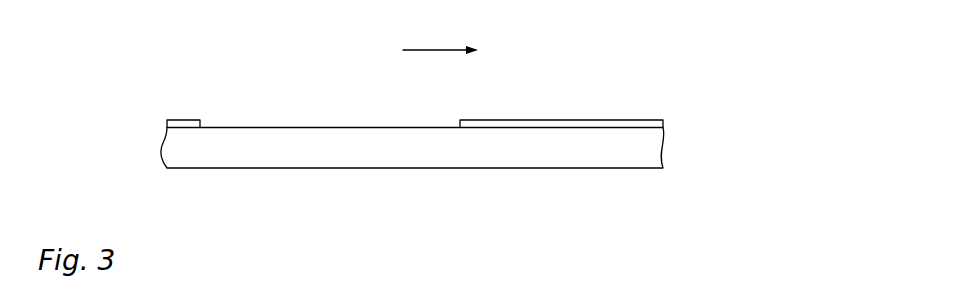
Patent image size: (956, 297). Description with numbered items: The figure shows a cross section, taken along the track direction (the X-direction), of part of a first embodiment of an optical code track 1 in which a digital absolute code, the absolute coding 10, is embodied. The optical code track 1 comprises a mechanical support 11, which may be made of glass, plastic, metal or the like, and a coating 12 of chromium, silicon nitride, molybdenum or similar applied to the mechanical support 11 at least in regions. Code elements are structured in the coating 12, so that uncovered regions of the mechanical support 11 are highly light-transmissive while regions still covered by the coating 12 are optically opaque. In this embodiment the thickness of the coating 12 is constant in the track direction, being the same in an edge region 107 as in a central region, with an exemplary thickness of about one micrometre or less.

The optical code track 1 is at (489, 121).
The absolute coding 10 is at (489, 121).
The mechanical support 11 is at (363, 157).
The coating 12 is at (597, 120).
The edge region 107 is at (187, 120).